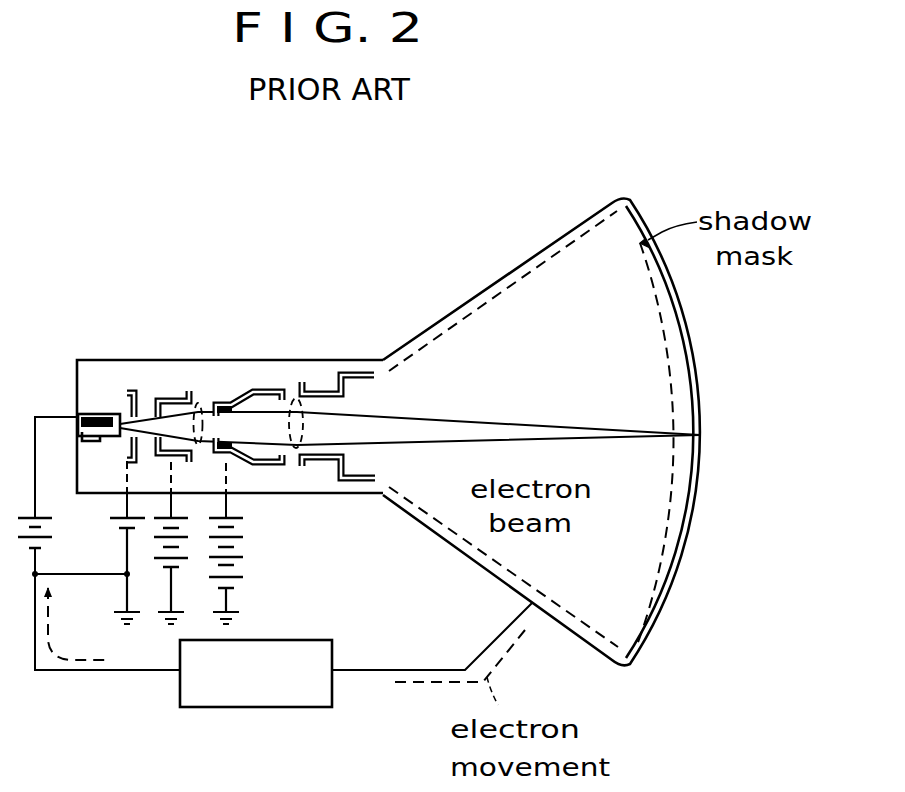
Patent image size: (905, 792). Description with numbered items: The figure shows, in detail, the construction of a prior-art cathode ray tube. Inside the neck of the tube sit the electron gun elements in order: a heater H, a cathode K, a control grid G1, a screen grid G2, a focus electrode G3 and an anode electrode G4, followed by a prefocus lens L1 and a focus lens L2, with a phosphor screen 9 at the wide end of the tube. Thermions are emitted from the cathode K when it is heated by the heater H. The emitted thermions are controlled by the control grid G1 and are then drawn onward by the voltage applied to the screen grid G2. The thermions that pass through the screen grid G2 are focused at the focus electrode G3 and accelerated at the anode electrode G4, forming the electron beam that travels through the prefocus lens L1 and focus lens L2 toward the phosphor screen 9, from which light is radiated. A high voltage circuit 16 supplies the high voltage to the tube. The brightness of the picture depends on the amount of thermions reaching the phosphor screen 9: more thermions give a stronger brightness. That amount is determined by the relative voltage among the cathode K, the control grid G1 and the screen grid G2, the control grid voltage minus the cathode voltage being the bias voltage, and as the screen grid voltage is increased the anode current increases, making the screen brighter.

The phosphor screen 9 is at (692, 305).
The high voltage circuit 16 is at (297, 640).
The cathode K is at (99, 412).
The heater H is at (99, 543).
The control grid G1 is at (127, 494).
The screen grid G2 is at (169, 494).
The focus electrode G3 is at (241, 494).
The anode electrode G4 is at (338, 421).
The prefocus lens L1 is at (199, 403).
The focus lens L2 is at (296, 398).